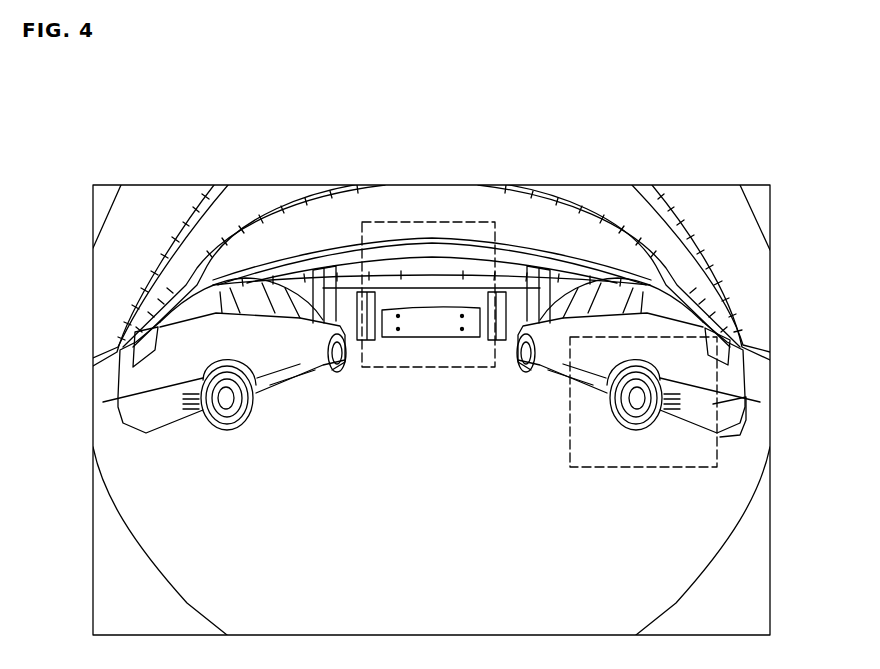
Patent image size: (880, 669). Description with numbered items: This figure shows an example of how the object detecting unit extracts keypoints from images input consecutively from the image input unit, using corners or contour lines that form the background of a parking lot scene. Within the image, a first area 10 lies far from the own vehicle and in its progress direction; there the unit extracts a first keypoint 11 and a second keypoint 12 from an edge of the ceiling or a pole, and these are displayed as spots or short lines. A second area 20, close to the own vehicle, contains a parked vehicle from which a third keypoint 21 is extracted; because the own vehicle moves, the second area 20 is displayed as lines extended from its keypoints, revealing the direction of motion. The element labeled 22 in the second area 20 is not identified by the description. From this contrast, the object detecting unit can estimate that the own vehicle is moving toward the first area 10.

The first area 10 is at (428, 222).
The first keypoint 11 is at (418, 337).
The second keypoint 12 is at (401, 240).
The second area 20 is at (672, 311).
The third keypoint 21 is at (745, 358).
The rear bumper 22 is at (743, 397).